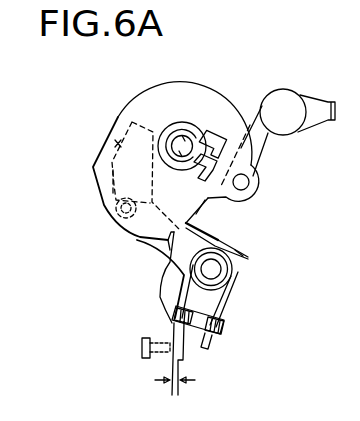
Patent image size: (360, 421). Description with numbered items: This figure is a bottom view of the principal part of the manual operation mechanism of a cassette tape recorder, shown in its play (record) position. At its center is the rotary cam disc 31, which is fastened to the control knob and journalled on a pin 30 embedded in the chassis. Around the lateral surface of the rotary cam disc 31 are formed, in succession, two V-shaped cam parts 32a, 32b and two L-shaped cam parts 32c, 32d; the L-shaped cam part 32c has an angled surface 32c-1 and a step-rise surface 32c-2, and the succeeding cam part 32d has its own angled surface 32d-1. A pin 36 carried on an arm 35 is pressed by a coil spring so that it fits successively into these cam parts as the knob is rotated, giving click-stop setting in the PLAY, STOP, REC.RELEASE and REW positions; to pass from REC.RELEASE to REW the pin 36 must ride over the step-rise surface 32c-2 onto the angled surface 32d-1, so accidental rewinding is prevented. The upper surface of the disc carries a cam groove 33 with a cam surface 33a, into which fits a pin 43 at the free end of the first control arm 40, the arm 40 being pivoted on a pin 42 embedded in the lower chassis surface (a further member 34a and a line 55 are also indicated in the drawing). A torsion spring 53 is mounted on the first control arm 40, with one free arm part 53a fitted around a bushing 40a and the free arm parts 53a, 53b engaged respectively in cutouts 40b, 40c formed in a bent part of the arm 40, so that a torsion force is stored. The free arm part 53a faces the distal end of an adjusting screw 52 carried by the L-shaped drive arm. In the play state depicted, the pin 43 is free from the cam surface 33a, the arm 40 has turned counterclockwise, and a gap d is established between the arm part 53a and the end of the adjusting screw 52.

The pin 30 is at (185, 139).
The rotary cam disc 31 is at (213, 87).
The V-shaped cam part 32a is at (255, 178).
The V-shaped cam part 32b is at (250, 197).
The L-shaped cam part 32c is at (245, 235).
The angled surface 32c-1 is at (200, 217).
The step-rise surface 32c-2 is at (237, 257).
The L-shaped cam part 32d is at (167, 270).
The angled surface 32d-1 is at (169, 255).
The cam groove 33 is at (108, 138).
The cam surface 33a is at (112, 180).
The member 34a is at (345, 200).
The arm 35 is at (288, 145).
The pin 36 is at (207, 183).
The first control arm 40 is at (138, 239).
The bushing 40a is at (210, 283).
The cutout 40b is at (176, 320).
The cutout 40c is at (222, 337).
The pin 42 is at (220, 272).
The pin 43 is at (118, 217).
The adjusting screw 52 is at (140, 343).
The torsion spring 53 is at (144, 312).
The free arm part 53a is at (188, 353).
The free arm part 53b is at (213, 340).
The hidden line 55 is at (239, 112).
The gap d is at (170, 387).